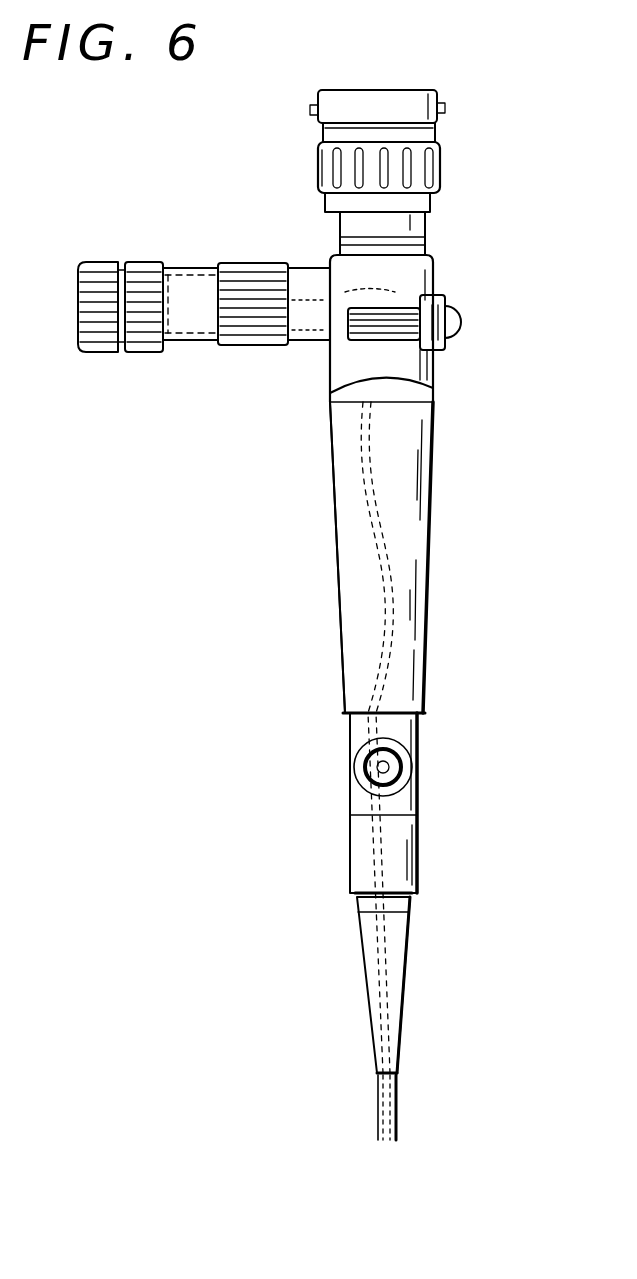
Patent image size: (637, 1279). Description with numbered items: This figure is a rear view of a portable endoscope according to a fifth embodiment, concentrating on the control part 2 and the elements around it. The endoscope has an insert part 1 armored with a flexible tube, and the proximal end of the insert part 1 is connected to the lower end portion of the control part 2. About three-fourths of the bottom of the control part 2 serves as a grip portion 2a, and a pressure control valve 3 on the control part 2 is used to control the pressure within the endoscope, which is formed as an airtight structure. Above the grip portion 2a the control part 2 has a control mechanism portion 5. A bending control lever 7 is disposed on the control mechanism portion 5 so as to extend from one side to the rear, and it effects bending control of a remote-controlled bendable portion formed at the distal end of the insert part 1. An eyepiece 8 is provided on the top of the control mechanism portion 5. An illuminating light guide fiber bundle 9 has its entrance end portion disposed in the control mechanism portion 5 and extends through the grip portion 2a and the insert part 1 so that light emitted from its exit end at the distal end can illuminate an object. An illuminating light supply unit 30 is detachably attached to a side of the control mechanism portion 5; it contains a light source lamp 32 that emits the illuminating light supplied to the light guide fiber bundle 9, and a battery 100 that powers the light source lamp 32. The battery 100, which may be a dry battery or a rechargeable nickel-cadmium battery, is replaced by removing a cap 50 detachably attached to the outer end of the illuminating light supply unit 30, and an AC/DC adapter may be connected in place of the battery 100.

The insert part 1 is at (398, 1108).
The control part 2 is at (433, 457).
The grip portion 2a is at (343, 565).
The pressure control valve 3 is at (413, 770).
The control mechanism portion 5 is at (432, 268).
The bending control lever 7 is at (410, 342).
The eyepiece 8 is at (435, 168).
The illuminating light guide fiber bundle 9 is at (390, 608).
The illuminating light supply unit 30 is at (204, 308).
The light source lamp 32 is at (313, 293).
The cap 50 is at (124, 354).
The battery 100 is at (195, 342).